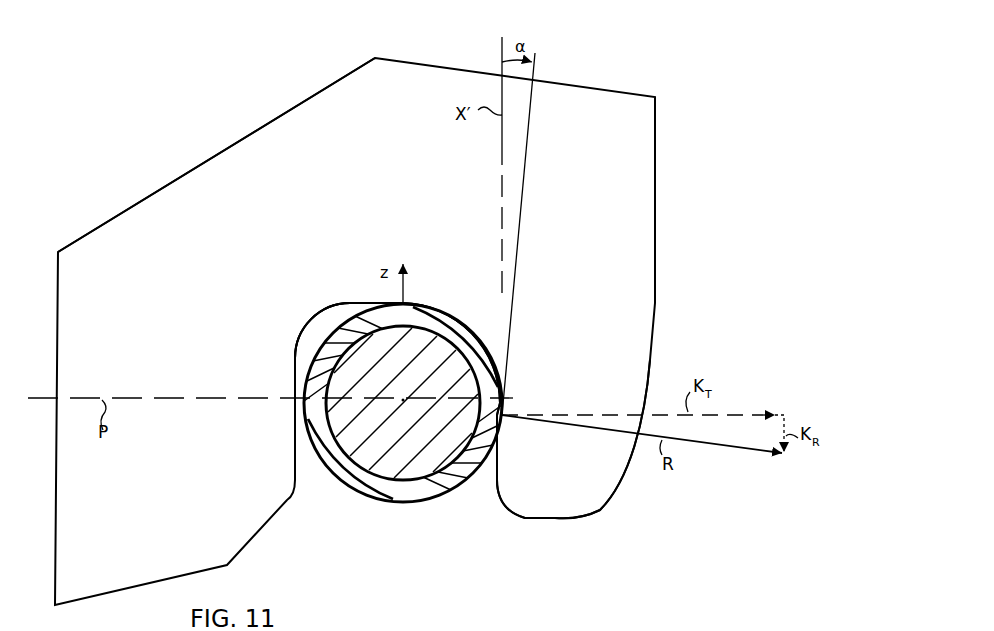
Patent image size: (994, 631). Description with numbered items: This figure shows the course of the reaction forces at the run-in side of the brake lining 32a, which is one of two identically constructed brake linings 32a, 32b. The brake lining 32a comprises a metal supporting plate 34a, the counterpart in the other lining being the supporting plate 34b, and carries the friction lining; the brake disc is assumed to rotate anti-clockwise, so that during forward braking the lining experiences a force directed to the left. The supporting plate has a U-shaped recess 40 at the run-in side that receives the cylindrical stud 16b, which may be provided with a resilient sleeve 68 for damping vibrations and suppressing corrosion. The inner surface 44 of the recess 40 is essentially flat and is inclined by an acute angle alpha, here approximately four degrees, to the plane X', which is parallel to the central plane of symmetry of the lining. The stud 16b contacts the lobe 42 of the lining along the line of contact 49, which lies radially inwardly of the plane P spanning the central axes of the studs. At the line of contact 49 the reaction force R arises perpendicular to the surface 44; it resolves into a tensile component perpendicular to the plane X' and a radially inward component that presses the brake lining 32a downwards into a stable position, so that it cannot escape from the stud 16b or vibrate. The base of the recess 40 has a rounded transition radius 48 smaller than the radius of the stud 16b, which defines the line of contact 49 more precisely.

The brake lining 32a is at (355, 305).
The brake lining 32b is at (213, 68).
The supporting plate 34a is at (216, 155).
The supporting plate 34b is at (190, 222).
The transition radius 48 is at (312, 330).
The lobe 42 is at (591, 497).
The stud 16b is at (343, 490).
The sleeve 68 is at (464, 478).
The U-shaped recess 40 is at (423, 537).
The inner surface 44 is at (512, 380).
The line of contact 49 is at (510, 423).